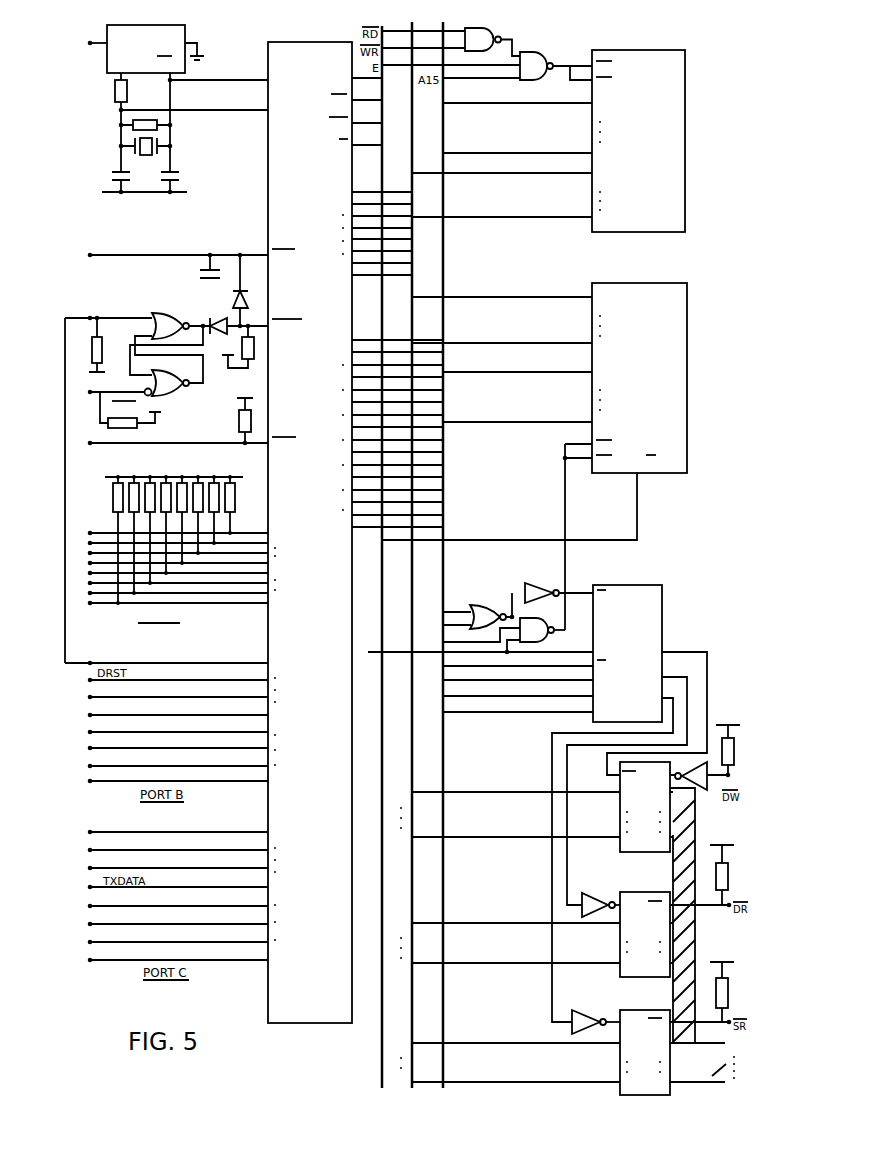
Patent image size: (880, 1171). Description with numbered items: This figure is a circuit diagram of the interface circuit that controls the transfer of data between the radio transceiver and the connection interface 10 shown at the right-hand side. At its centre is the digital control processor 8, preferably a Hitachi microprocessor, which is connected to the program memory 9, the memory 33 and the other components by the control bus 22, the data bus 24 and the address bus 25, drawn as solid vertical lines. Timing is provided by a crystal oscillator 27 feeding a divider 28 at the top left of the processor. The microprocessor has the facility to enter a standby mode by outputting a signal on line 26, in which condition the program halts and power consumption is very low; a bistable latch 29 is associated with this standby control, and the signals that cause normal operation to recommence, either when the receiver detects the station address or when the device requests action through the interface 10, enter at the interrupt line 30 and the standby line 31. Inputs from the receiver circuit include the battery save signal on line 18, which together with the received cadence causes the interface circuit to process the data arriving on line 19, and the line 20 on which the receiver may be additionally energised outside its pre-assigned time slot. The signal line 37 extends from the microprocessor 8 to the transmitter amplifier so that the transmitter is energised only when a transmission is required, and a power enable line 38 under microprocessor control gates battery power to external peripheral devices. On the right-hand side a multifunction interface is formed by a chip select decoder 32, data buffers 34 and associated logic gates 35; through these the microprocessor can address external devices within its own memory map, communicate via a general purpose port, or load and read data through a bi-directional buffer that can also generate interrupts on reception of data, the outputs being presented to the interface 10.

The digital control processor 8 is at (282, 532).
The program memory 9 is at (548, 141).
The connection interface 10 is at (690, 1082).
The battery save line 18 is at (178, 431).
The data line 19 is at (178, 900).
The receiver energise line 20 is at (178, 687).
The control bus 22 is at (385, 548).
The data bus 24 is at (411, 548).
The address bus 25 is at (442, 548).
The standby signal line 26 is at (108, 337).
The crystal oscillator 27 is at (177, 122).
The divider 28 is at (140, 49).
The bistable latch 29 is at (167, 354).
The interrupt line 30 is at (178, 549).
The standby line 31 is at (124, 402).
The chip select decoder 32 is at (537, 803).
The memory 33 is at (534, 456).
The data buffers 34 is at (562, 928).
The logic gates 35 is at (586, 1014).
The transmitter enable signal line 37 is at (178, 705).
The power enable line 38 is at (178, 760).